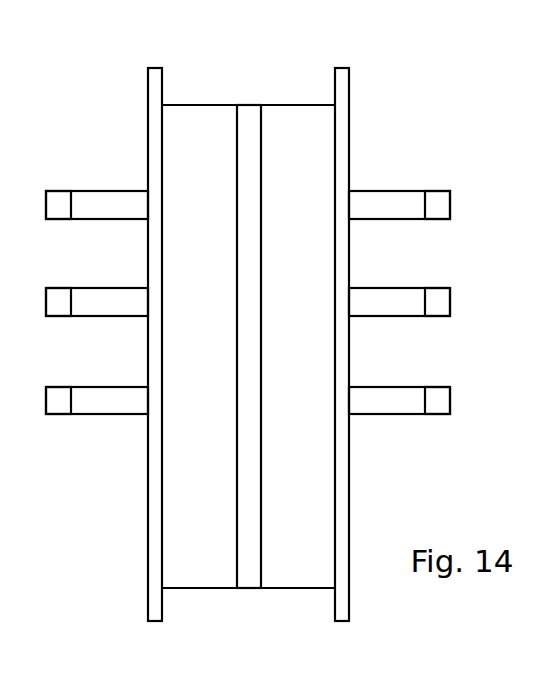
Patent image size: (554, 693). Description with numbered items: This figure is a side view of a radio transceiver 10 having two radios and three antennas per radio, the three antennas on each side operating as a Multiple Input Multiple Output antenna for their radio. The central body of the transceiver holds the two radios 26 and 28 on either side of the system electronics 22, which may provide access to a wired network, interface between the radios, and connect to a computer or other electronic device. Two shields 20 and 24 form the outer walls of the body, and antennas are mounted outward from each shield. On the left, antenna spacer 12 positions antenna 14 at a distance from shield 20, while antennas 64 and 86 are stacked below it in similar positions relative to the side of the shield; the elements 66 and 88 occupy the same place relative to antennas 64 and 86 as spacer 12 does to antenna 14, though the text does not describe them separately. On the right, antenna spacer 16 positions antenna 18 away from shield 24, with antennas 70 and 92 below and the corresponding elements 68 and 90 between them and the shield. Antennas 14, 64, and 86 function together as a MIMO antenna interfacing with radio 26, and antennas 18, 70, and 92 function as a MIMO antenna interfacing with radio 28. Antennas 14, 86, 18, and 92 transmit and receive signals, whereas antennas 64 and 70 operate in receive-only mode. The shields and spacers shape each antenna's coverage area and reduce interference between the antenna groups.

The radio transceiver 10 is at (260, 41).
The antenna spacer 12 is at (108, 190).
The antenna 14 is at (57, 190).
The antenna spacer 16 is at (396, 190).
The antenna 18 is at (440, 190).
The shield 20 is at (147, 621).
The system electronics 22 is at (249, 590).
The shield 24 is at (349, 621).
The radio 26 is at (200, 590).
The radio 28 is at (300, 590).
The antenna 64 is at (55, 317).
The third arm 66 is at (118, 317).
The fourth arm 68 is at (368, 317).
The antenna 70 is at (432, 317).
The antenna 86 is at (55, 415).
The fifth arm 88 is at (118, 415).
The sixth arm 90 is at (368, 415).
The antenna 92 is at (432, 415).